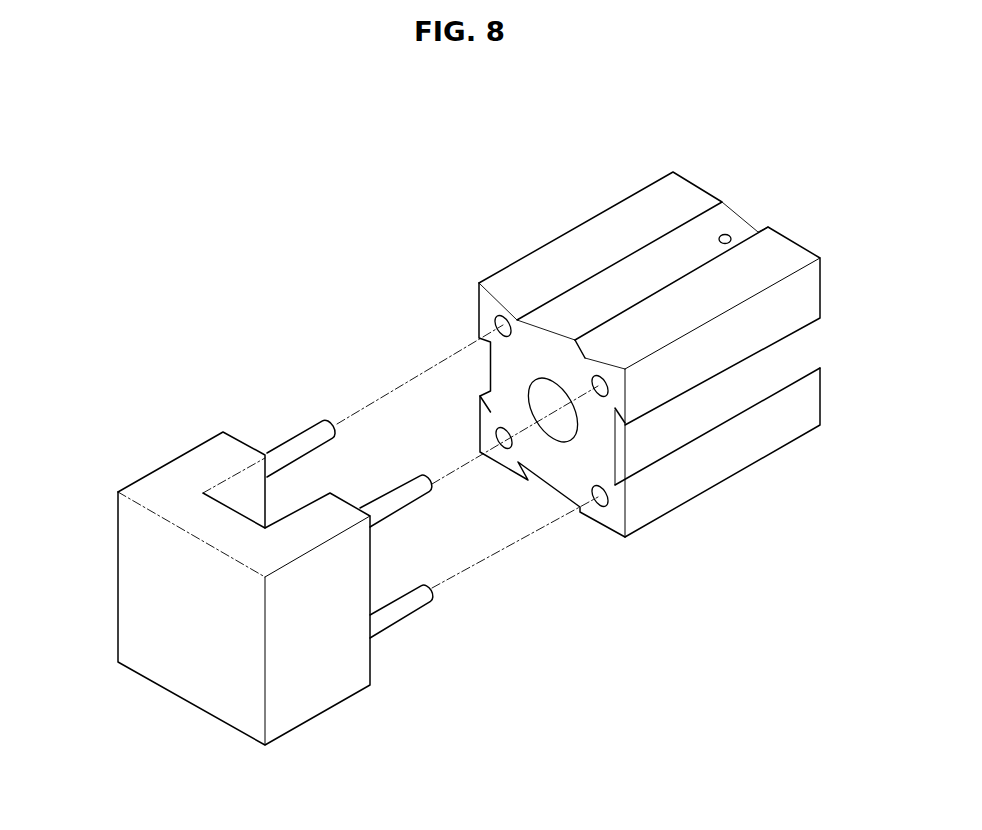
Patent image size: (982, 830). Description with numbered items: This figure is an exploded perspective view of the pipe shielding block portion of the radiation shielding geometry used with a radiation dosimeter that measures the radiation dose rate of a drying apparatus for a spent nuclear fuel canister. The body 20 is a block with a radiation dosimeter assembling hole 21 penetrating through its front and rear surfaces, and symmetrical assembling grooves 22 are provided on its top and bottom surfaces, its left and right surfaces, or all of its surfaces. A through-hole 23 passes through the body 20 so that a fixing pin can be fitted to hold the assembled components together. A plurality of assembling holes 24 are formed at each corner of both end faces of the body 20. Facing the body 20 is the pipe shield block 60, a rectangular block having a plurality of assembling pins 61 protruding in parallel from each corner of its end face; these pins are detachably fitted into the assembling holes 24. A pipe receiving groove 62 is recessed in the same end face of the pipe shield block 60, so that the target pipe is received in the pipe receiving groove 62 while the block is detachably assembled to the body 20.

The body 20 is at (631, 188).
The radiation dosimeter assembling hole 21 is at (490, 391).
The assembling grooves 22 is at (582, 306).
The through-hole 23 is at (730, 235).
The assembling holes 24 is at (505, 315).
The pipe shield block 60 is at (126, 470).
The assembling pins 61 is at (402, 494).
The pipe receiving groove 62 is at (240, 515).